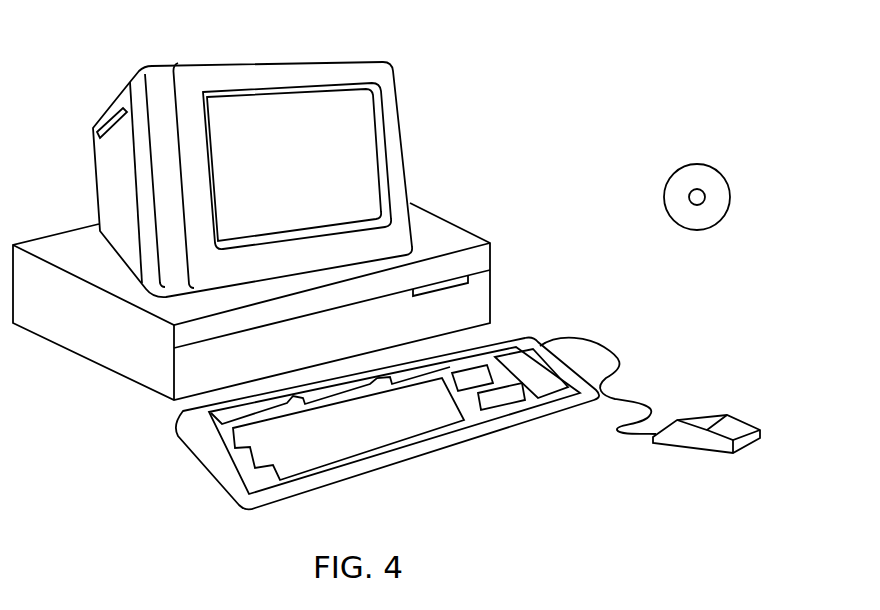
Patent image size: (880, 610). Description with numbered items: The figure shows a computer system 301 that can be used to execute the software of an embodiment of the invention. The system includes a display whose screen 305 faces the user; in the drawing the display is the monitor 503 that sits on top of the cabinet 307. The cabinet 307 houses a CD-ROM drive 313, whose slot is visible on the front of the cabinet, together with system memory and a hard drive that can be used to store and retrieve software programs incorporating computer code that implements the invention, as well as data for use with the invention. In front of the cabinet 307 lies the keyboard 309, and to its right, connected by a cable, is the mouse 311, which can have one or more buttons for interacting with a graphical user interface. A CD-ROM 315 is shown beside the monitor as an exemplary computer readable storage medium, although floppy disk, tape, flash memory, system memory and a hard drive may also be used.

The computer system 301 is at (616, 36).
The screen 305 is at (367, 131).
The monitor 503 is at (407, 176).
The cabinet 307 is at (140, 384).
The CD-ROM drive 313 is at (468, 275).
The keyboard 309 is at (400, 464).
The mouse 311 is at (744, 421).
The CD-ROM 315 is at (715, 166).